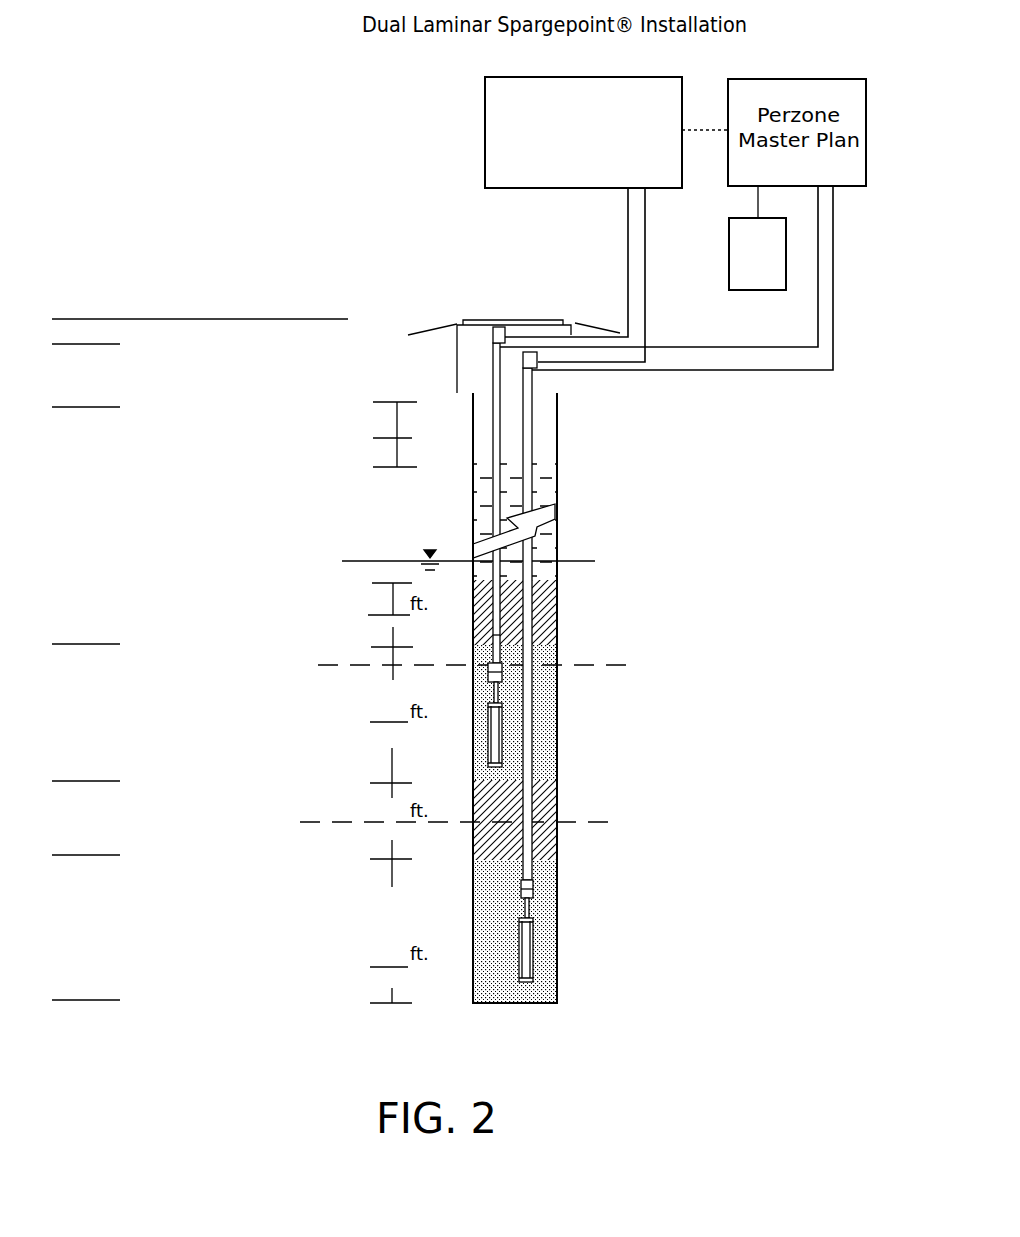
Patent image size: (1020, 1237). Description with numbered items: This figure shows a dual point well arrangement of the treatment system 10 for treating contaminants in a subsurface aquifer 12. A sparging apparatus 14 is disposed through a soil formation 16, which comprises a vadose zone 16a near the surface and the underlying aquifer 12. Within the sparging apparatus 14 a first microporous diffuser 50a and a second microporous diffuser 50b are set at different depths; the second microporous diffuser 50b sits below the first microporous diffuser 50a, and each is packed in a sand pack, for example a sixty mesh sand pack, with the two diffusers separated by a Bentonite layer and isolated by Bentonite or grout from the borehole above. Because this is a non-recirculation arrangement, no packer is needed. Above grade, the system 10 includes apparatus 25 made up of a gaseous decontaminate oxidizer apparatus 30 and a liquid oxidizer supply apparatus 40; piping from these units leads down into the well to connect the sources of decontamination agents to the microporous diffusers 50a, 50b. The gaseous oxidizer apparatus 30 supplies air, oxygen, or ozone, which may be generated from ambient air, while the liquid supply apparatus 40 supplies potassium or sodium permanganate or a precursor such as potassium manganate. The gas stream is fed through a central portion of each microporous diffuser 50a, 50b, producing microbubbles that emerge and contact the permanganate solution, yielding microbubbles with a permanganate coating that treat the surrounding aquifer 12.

The treatment system 10 is at (266, 265).
The gaseous decontaminate oxidizer apparatus 30 is at (485, 138).
The apparatus 25 is at (595, 204).
The liquid oxidizer supply apparatus 40 is at (772, 266).
The sparging apparatus 14 is at (636, 664).
The subsurface aquifer 12 is at (249, 627).
The vadose zone 16a is at (235, 471).
The soil formation 16 is at (617, 698).
The first microporous diffuser 50a is at (485, 728).
The second microporous diffuser 50b is at (540, 953).